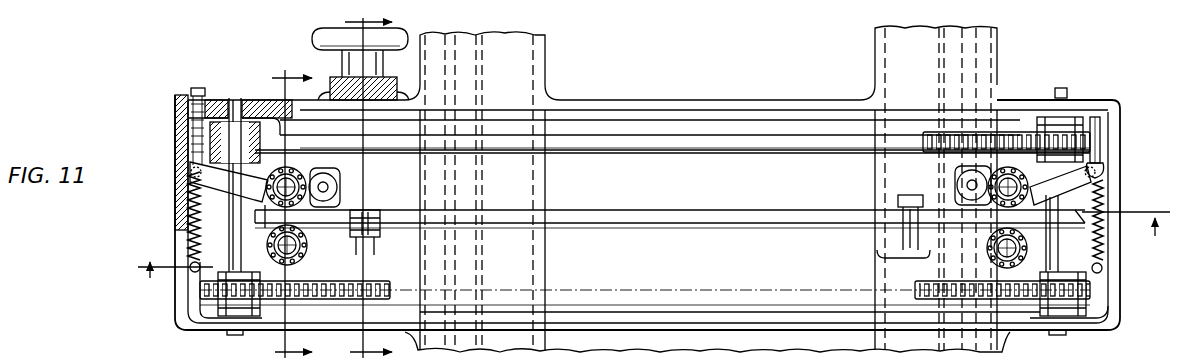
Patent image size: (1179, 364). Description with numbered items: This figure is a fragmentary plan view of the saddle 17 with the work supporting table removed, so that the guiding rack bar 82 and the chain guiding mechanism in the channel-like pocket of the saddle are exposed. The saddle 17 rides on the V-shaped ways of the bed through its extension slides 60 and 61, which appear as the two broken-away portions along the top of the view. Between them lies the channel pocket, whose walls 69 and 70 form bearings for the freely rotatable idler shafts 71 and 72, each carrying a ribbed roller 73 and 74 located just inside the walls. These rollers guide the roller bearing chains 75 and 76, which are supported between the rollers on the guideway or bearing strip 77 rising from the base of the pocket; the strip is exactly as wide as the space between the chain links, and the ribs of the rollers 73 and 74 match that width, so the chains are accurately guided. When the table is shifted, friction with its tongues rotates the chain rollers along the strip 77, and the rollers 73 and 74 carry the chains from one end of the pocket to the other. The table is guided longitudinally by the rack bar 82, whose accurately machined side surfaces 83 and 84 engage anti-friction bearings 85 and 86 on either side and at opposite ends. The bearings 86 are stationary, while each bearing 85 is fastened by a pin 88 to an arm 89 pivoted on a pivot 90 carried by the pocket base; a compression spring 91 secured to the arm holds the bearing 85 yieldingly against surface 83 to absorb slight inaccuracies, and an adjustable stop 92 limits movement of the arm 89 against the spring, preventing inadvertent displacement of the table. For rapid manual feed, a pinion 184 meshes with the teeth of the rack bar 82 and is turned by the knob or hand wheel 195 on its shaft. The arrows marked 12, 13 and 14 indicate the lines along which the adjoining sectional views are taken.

The wall of the channel pocket 70 is at (1092, 327).
The extension slide 60 is at (535, 50).
The extension slide 61 is at (900, 52).
The wall of the channel pocket 69 is at (1036, 100).
The saddle 17 is at (660, 340).
The knob or hand wheel 195 is at (320, 34).
The section line 14 is at (352, 188).
The section line 13 is at (280, 217).
The section line 12 is at (650, 257).
The idler shaft 72 is at (233, 214).
The idler shaft 71 is at (1058, 230).
The ribbed roller 73 is at (232, 84).
The adjustable stop 92 is at (187, 106).
The arm 89 is at (205, 172).
The compression spring 91 is at (188, 215).
The anti-friction bearing 85 is at (266, 185).
The anti-friction bearing 86 is at (307, 245).
The pivot 90 is at (325, 186).
The guiding rack bar 82 is at (604, 190).
The side surface of the rack bar 83 is at (672, 194).
The side surface of the rack bar 84 is at (682, 224).
The guideway or bearing strip 77 is at (685, 152).
The pinion 184 is at (378, 224).
The roller bearing chain 76 is at (345, 281).
The roller bearing chain 75 is at (945, 152).
The ribbed roller 74 is at (218, 310).
The pin 88 is at (903, 226).